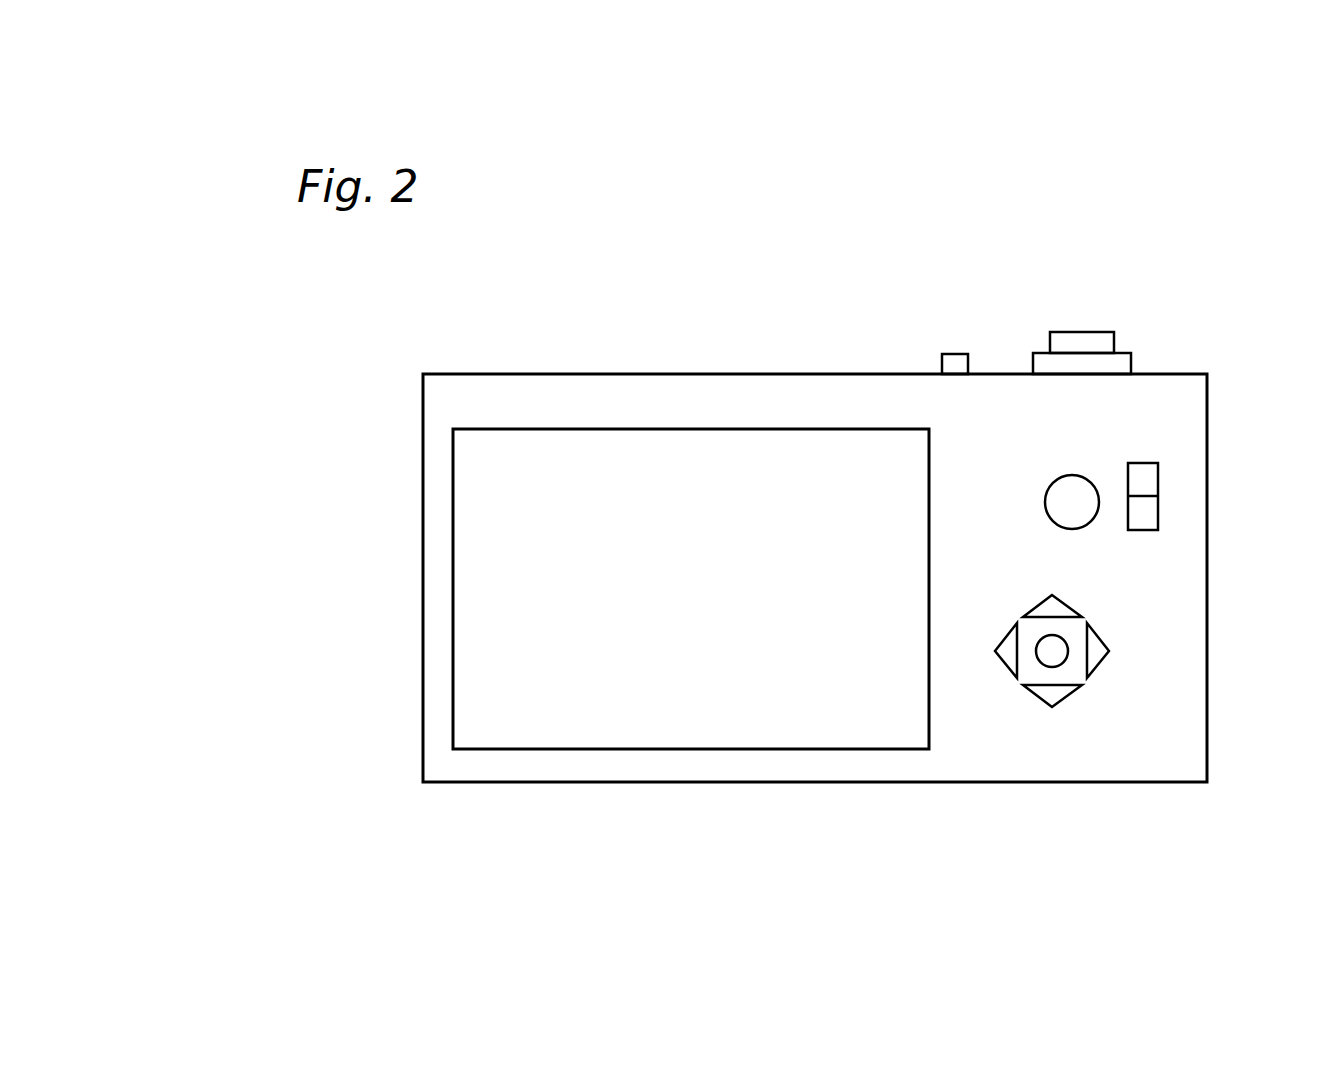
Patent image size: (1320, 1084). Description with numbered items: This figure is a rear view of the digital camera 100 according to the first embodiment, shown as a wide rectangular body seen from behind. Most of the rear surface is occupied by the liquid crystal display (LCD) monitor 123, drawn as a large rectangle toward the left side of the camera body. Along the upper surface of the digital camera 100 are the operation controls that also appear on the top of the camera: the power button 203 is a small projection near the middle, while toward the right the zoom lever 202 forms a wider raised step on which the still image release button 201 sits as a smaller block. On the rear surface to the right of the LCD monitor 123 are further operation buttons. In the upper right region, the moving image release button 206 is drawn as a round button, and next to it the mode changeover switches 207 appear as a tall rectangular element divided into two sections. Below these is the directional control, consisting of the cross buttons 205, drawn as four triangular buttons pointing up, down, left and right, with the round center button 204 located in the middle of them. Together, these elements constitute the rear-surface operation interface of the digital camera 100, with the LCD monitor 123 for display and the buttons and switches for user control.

The digital camera 100 is at (530, 305).
The liquid crystal display (LCD) monitor 123 is at (628, 577).
The still image release button 201 is at (1104, 340).
The zoom lever 202 is at (1123, 363).
The power button 203 is at (943, 353).
The center button 204 is at (1054, 653).
The cross buttons 205 is at (1053, 693).
The moving image release button 206 is at (1072, 502).
The mode changeover switches 207 is at (1137, 505).